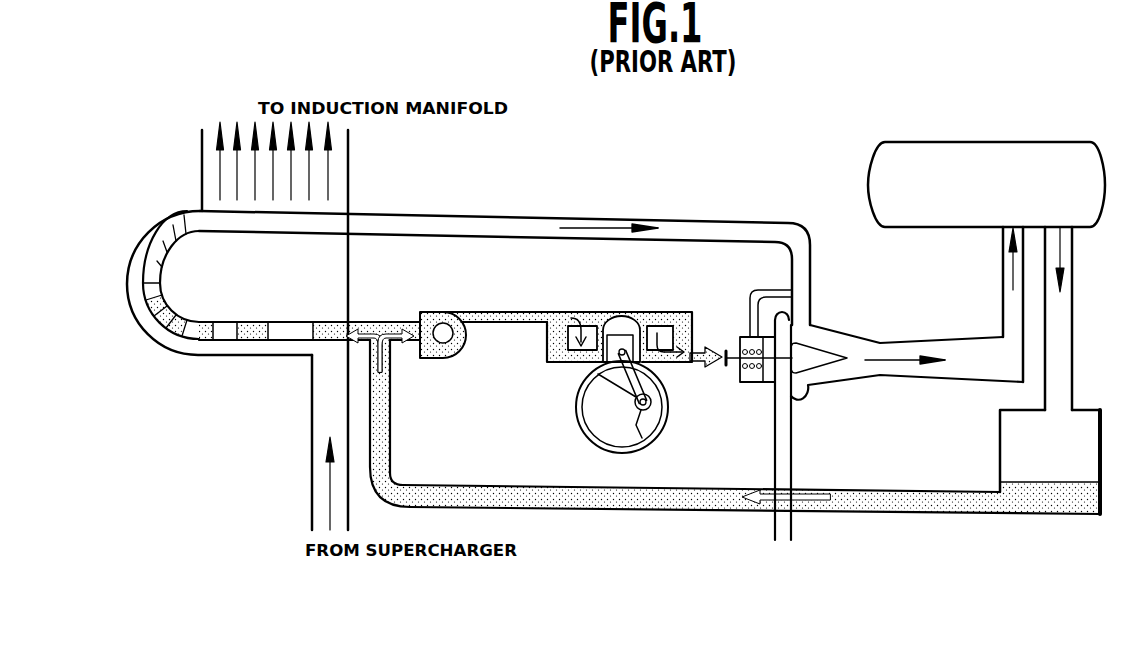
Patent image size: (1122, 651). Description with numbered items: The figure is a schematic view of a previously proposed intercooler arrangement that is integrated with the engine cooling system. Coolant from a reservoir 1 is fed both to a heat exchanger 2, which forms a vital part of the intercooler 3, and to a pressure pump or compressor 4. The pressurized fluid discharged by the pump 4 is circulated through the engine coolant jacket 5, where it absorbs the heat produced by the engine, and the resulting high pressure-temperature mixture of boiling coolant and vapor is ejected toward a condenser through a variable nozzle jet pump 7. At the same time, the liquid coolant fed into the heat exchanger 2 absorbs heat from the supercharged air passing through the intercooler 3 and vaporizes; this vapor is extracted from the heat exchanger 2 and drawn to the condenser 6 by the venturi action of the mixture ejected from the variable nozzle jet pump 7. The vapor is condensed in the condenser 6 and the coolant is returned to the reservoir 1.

The reservoir 1 is at (1000, 441).
The heat exchanger 2 is at (193, 322).
The intercooler 3 is at (180, 352).
The pressure pump or compressor 4 is at (463, 357).
The engine coolant jacket 5 is at (598, 312).
The condenser 6 is at (936, 142).
The variable nozzle jet pump 7 is at (848, 345).